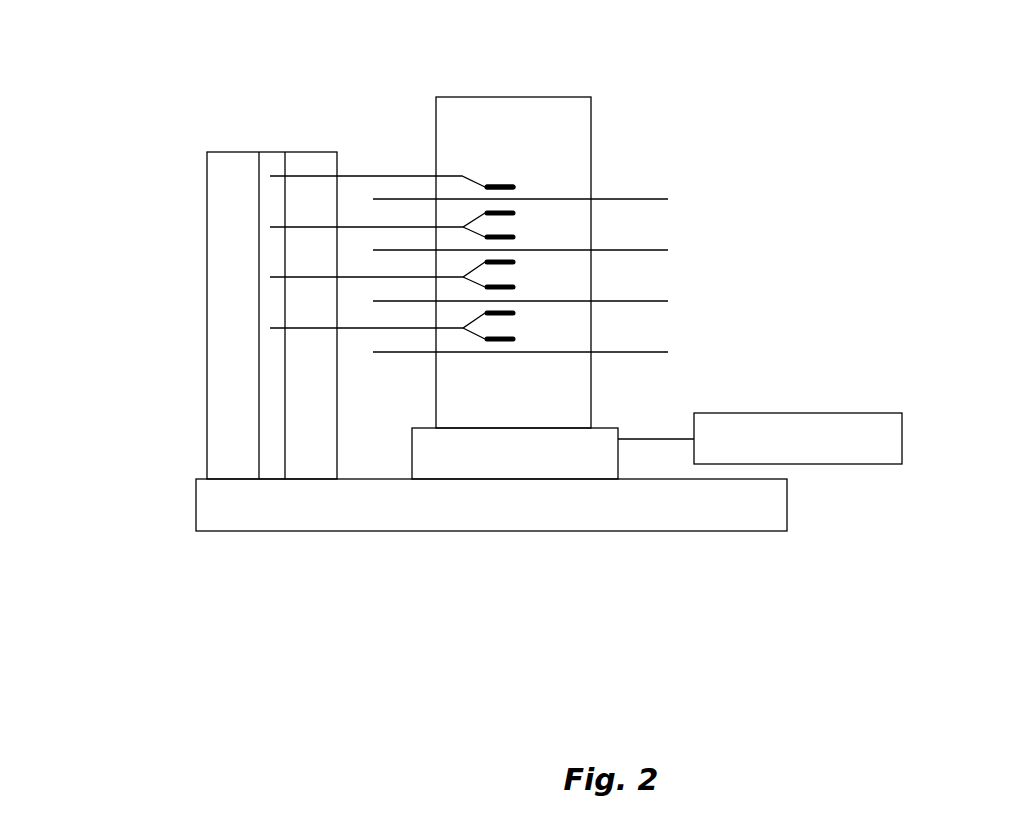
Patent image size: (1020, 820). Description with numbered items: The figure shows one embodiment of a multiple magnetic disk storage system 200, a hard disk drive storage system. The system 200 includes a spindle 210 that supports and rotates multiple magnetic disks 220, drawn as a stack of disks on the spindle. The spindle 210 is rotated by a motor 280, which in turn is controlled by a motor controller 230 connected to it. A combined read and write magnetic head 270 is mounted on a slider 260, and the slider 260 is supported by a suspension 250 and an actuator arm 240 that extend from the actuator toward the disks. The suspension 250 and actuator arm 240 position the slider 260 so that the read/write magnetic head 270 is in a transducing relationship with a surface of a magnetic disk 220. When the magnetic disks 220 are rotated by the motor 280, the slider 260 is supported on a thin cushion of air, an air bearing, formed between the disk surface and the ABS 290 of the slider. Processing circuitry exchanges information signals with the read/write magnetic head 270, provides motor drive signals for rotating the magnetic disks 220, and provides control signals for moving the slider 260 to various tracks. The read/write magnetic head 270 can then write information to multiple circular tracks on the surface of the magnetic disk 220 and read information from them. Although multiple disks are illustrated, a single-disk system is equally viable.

The multiple magnetic disk storage system 200 is at (80, 611).
The spindle 210 is at (579, 97).
The magnetic disks 220 is at (630, 199).
The motor controller 230 is at (823, 413).
The actuator arm 240 is at (385, 173).
The suspension 250 is at (475, 173).
The slider 260 is at (503, 183).
The read/write magnetic head 270 is at (515, 341).
The motor 280 is at (607, 425).
The ABS 290 is at (510, 183).